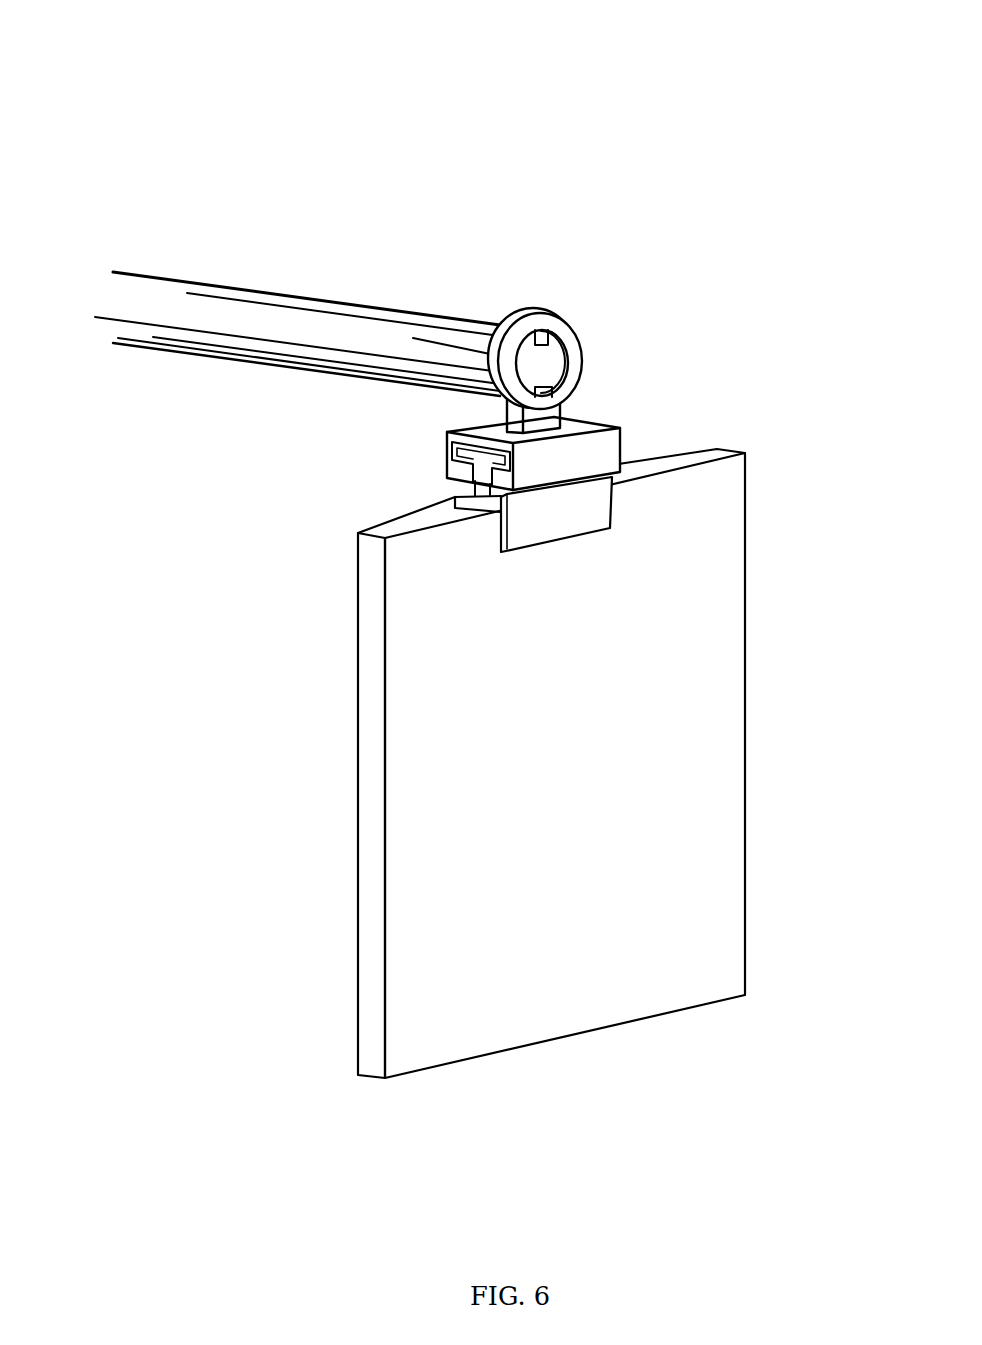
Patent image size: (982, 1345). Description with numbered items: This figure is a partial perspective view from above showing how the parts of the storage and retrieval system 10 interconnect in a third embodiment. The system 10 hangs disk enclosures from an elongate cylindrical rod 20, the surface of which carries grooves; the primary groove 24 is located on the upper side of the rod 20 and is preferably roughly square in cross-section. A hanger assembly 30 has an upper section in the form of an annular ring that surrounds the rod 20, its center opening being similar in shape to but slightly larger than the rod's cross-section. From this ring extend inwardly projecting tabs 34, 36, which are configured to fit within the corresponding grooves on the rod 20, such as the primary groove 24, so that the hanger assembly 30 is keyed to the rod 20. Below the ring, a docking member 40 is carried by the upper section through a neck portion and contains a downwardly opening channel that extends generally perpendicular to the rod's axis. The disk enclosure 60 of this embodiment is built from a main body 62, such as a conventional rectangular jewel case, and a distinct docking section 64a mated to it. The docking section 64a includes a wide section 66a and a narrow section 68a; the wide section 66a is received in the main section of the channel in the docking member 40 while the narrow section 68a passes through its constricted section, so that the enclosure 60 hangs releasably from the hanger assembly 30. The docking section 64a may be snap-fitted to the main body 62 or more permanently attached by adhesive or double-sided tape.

The storage and retrieval system 10 is at (349, 110).
The rod 20 is at (162, 312).
The primary groove 24 is at (220, 288).
The hanger assembly 30 is at (573, 343).
The inwardly extending tab 34 is at (545, 340).
The inwardly extending tab 36 is at (567, 375).
The docking member 40 is at (577, 425).
The disk enclosure 60 is at (217, 572).
The main body 62 is at (702, 685).
The docking section 64a is at (568, 518).
The wide section 66a is at (455, 448).
The narrow section 68a is at (453, 497).